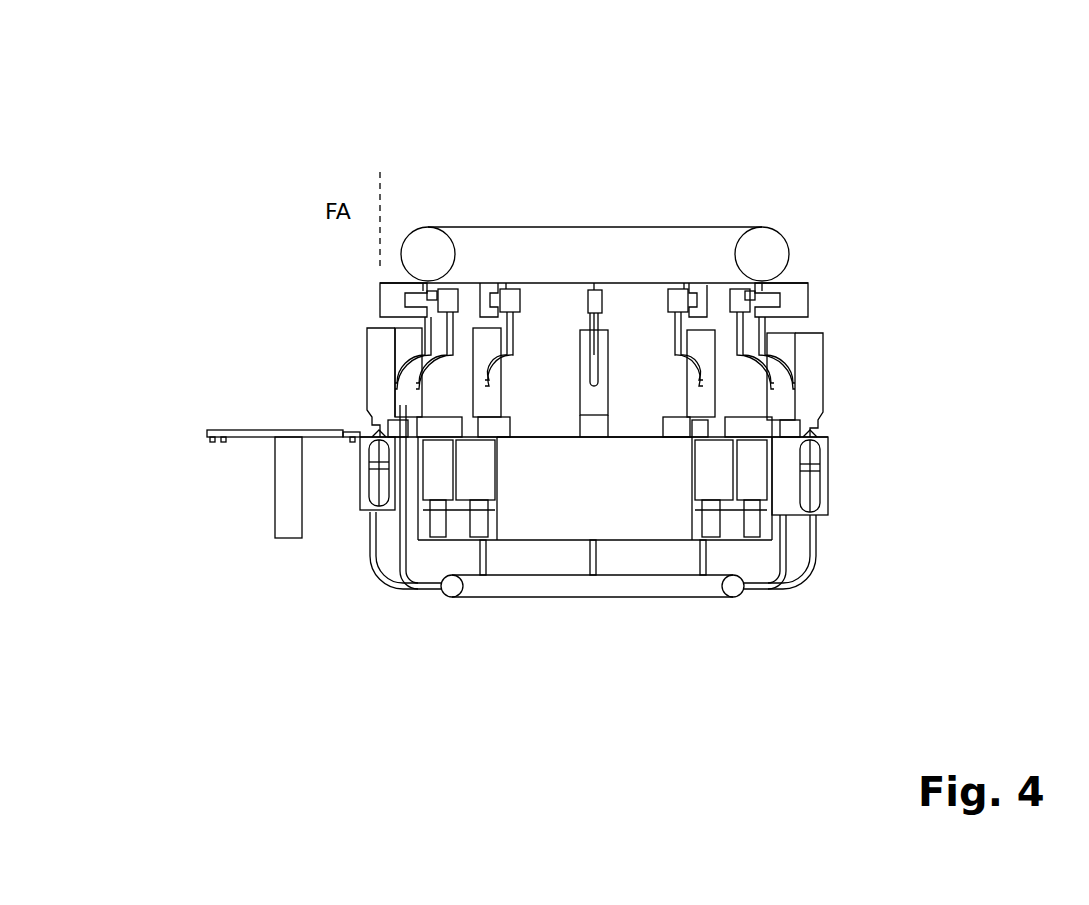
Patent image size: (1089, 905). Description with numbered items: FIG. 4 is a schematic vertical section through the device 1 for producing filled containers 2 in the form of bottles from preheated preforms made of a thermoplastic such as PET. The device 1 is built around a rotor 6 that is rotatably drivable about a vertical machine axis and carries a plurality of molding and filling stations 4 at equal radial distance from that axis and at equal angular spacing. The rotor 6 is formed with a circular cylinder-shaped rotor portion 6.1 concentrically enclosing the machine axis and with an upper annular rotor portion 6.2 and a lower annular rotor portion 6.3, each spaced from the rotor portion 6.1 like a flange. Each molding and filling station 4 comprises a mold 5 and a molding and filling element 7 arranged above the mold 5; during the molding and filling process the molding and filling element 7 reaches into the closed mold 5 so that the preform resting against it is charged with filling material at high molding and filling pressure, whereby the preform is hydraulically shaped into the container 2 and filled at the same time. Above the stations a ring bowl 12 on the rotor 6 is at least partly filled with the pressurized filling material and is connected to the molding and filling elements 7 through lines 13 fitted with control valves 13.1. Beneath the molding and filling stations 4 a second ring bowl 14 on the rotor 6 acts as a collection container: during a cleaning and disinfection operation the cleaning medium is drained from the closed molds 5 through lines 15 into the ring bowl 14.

The device 1 is at (848, 162).
The container 2 is at (822, 490).
The molding and filling station 4 is at (852, 443).
The mold 5 is at (828, 470).
The rotor 6 is at (557, 560).
The rotor portion 6.1 is at (602, 512).
The rotor portion 6.2 is at (630, 437).
The rotor portion 6.3 is at (525, 541).
The molding and filling element 7 is at (372, 347).
The ring bowl 12 is at (666, 240).
The line 13 is at (512, 355).
The control valve 13.1 is at (508, 283).
The ring bowl 14 is at (530, 592).
The line 15 is at (397, 556).